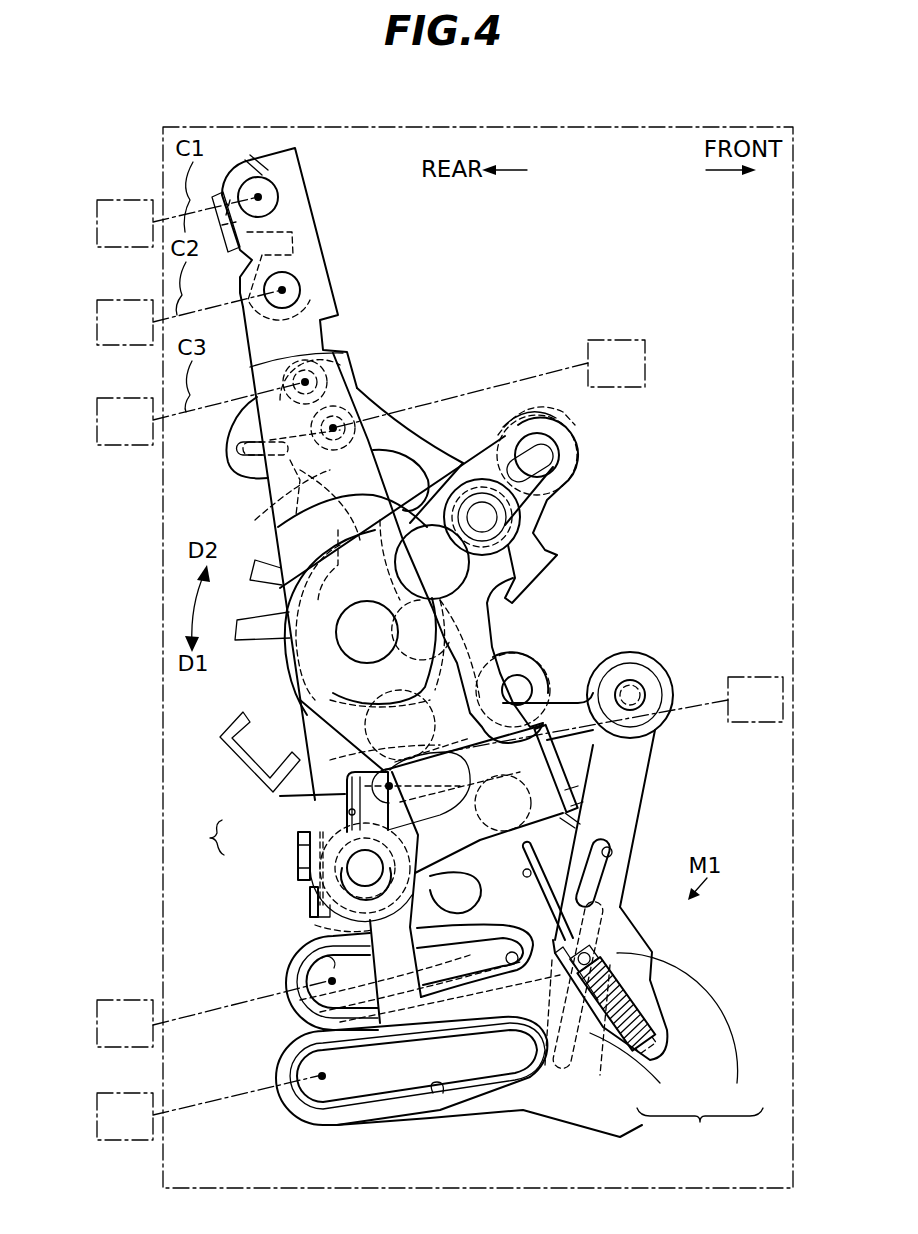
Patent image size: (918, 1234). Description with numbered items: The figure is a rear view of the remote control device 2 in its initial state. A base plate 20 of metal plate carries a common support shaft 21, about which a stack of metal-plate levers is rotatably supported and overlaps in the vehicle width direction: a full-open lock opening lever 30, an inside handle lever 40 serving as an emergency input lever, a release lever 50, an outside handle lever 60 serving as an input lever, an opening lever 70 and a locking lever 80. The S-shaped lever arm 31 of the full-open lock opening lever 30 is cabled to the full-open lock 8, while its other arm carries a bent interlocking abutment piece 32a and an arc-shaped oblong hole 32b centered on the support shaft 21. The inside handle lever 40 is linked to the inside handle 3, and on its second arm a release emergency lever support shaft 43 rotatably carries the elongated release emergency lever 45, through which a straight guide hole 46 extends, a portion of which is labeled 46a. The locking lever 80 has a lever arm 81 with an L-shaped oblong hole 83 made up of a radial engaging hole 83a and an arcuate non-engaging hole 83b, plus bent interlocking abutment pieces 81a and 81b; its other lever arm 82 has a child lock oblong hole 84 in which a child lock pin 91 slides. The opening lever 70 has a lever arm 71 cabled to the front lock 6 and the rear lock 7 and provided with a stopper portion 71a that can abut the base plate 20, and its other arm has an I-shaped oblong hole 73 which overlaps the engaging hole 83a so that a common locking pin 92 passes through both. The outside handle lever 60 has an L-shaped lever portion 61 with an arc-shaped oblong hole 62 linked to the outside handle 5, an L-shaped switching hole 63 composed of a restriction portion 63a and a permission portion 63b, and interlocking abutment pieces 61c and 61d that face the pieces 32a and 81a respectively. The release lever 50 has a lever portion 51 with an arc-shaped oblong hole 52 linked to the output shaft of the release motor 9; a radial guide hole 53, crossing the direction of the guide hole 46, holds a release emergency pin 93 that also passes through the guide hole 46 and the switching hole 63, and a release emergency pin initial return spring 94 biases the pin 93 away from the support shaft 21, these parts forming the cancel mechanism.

The remote control device 2 is at (152, 529).
The inside handle 3 is at (606, 340).
The outside handle 5 is at (112, 1093).
The front lock 6 is at (112, 201).
The rear lock 7 is at (112, 300).
The full-open lock 8 is at (112, 398).
The release motor 9 is at (112, 1000).
The base plate 20 is at (157, 700).
The support shaft 21 is at (360, 620).
The full-open lock opening lever 30 is at (227, 475).
The lever arm 31 is at (228, 447).
The interlocking abutment piece 32a is at (313, 893).
The oblong hole 32b is at (520, 682).
The inside handle lever 40 is at (447, 440).
The release emergency lever support shaft 43 is at (645, 673).
The release emergency lever 45 is at (637, 830).
The guide hole 46 is at (610, 853).
The slot end 46a is at (563, 1087).
The release lever 50 is at (288, 948).
The lever portion 51 is at (568, 820).
The oblong hole 52 is at (332, 980).
The guide hole 53 is at (530, 880).
The outside handle lever 60 is at (297, 1130).
The lever portion 61 is at (637, 920).
The interlocking abutment piece 61c is at (310, 905).
The interlocking abutment piece 61d is at (573, 790).
The oblong hole 62 is at (433, 1093).
The switching hole 63 is at (700, 1128).
The restriction portion 63a is at (687, 1031).
The permission portion 63b is at (636, 1071).
The opening lever 70 is at (318, 198).
The lever arm 71 is at (322, 256).
The stopper portion 71a is at (218, 240).
The oblong hole 73 is at (345, 818).
The locking lever 80 is at (583, 473).
The lever arm 81 is at (463, 887).
The interlocking abutment piece 81a is at (567, 767).
The interlocking abutment piece 81b is at (300, 870).
The lever arm 82 is at (545, 505).
The oblong hole 83 is at (205, 837).
The engaging hole 83a is at (345, 845).
The non-engaging hole 83b is at (320, 797).
The child lock oblong hole 84 is at (545, 455).
The child lock pin 91 is at (520, 425).
The locking pin 92 is at (318, 928).
The release emergency pin 93 is at (523, 953).
The release emergency pin initial return spring 94 is at (668, 1035).